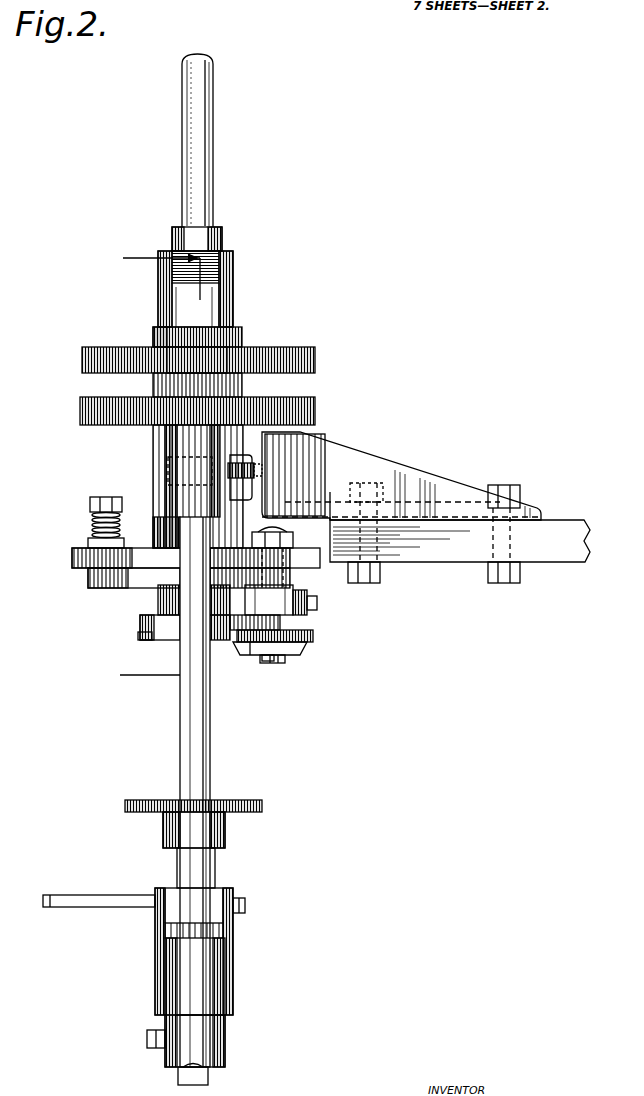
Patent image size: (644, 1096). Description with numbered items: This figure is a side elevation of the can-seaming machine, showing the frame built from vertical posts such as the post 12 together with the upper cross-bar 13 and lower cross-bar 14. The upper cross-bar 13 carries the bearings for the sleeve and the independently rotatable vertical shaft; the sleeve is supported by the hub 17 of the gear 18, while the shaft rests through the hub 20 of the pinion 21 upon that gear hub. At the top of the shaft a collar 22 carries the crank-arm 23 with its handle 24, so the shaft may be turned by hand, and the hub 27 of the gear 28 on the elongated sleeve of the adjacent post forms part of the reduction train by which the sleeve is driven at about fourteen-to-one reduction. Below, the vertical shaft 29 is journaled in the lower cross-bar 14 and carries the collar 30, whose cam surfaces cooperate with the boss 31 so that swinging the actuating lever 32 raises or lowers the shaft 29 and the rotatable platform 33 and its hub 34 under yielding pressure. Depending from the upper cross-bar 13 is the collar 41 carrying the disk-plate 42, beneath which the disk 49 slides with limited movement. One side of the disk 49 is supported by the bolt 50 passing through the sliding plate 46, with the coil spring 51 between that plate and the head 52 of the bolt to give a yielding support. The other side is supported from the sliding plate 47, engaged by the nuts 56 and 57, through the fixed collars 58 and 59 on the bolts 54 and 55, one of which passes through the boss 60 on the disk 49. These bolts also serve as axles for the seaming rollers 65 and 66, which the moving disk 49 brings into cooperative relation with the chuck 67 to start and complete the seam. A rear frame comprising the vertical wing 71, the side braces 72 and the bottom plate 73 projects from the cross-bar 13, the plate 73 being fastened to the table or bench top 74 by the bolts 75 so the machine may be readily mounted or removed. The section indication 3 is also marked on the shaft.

The section line 3 is at (160, 469).
The vertical rod or post 12 is at (205, 745).
The upper cross-bar 13 is at (178, 443).
The lower cross-bar 14 is at (210, 993).
The hub of the gear 17 is at (155, 390).
The gear 18 is at (288, 405).
The hub of a pinion 20 is at (218, 340).
The pinion 21 is at (205, 360).
The collar 22 is at (225, 300).
The crank-arm 23 is at (222, 240).
The handle 24 is at (213, 136).
The hub of a gear 27 is at (153, 332).
The gear 28 is at (288, 356).
The vertical shaft 29 is at (215, 866).
The collar 30 is at (233, 892).
The boss 31 is at (215, 937).
The actuating lever 32 is at (88, 896).
The rotatable platform 33 is at (235, 800).
The hub of the platform 34 is at (225, 838).
The collar 41 is at (160, 525).
The disk-plate 42 is at (72, 558).
The sliding plate 46 is at (108, 548).
The sliding plate 47 is at (250, 579).
The disk 49 is at (92, 578).
The bolt 50 is at (88, 544).
The coil spring 51 is at (92, 520).
The head of the bolt 52 is at (110, 492).
The bolt 54 is at (286, 657).
The bolt 55 is at (262, 662).
The nut 56 is at (290, 536).
The nut 57 is at (268, 533).
The fixed collar 58 is at (258, 622).
The fixed collar 59 is at (250, 638).
The boss 60 is at (270, 602).
The seaming roller 65 is at (292, 636).
The seaming roller 66 is at (252, 645).
The chuck 67 is at (140, 637).
The vertical wing 71 is at (262, 447).
The side braces 72 is at (335, 462).
The bottom plate 73 is at (455, 500).
The table or bench top 74 is at (460, 541).
The bolts 75 is at (488, 572).